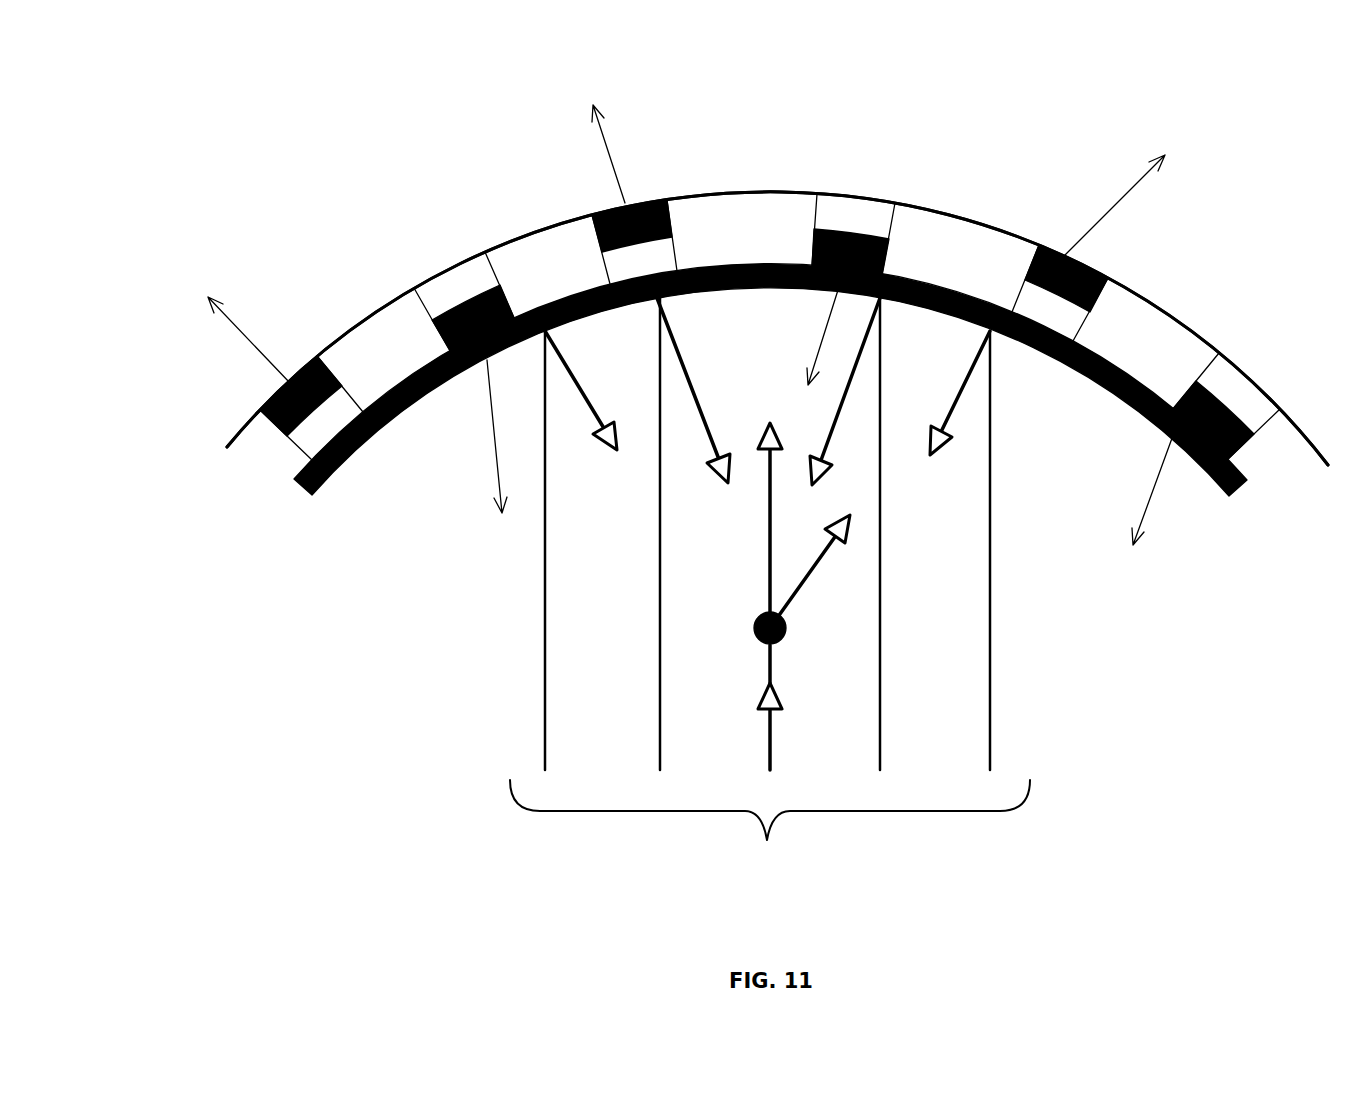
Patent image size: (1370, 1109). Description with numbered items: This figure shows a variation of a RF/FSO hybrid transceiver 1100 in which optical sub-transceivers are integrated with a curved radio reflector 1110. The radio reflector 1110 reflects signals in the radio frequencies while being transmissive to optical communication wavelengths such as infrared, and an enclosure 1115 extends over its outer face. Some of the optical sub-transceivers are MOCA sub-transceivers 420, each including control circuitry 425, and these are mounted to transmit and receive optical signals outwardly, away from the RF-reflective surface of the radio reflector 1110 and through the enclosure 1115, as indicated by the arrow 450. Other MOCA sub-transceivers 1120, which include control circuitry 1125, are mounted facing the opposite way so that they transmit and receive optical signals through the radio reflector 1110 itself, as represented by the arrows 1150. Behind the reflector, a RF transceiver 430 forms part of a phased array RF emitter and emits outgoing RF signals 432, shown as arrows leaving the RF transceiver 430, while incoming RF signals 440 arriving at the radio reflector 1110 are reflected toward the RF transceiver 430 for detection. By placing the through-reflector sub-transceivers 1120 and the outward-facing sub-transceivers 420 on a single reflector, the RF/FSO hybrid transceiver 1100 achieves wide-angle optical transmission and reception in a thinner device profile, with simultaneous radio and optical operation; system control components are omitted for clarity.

The RF/FSO hybrid transceiver 1100 is at (307, 175).
The enclosure 1115 is at (247, 422).
The radio reflector 1110 is at (318, 488).
The MOCA sub-transceiver 420 is at (272, 423).
The MOCA sub-transceiver 1120 is at (432, 322).
The control circuitry 425 is at (357, 403).
The control circuitry 1125 is at (492, 268).
The arrow 450 is at (247, 335).
The arrows 1150 is at (493, 447).
The incoming RF signals 440 is at (770, 590).
The outgoing RF signals 432 is at (765, 517).
The RF transceiver 430 is at (757, 640).